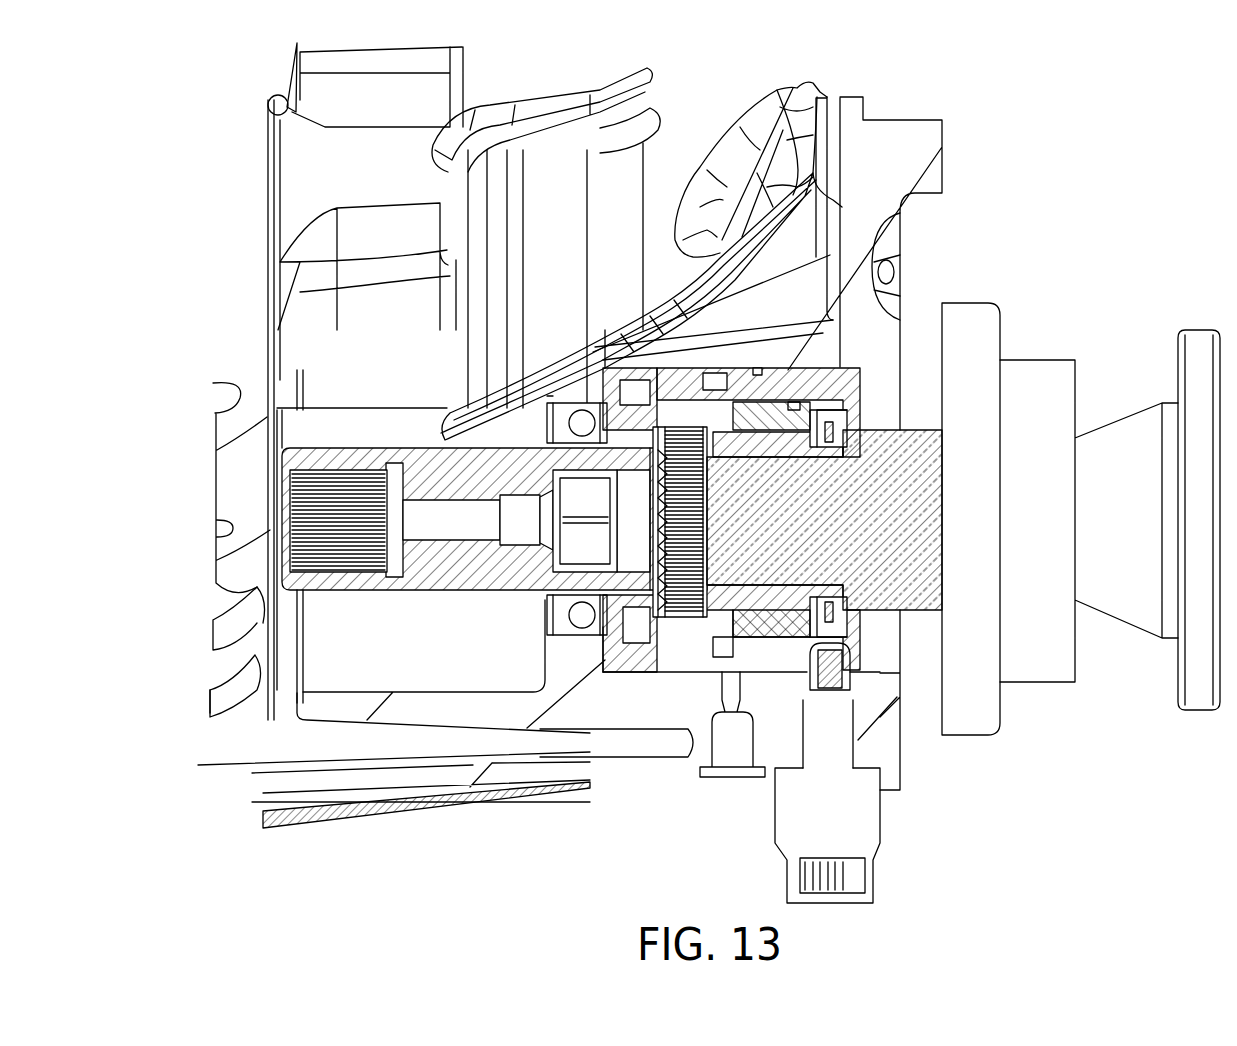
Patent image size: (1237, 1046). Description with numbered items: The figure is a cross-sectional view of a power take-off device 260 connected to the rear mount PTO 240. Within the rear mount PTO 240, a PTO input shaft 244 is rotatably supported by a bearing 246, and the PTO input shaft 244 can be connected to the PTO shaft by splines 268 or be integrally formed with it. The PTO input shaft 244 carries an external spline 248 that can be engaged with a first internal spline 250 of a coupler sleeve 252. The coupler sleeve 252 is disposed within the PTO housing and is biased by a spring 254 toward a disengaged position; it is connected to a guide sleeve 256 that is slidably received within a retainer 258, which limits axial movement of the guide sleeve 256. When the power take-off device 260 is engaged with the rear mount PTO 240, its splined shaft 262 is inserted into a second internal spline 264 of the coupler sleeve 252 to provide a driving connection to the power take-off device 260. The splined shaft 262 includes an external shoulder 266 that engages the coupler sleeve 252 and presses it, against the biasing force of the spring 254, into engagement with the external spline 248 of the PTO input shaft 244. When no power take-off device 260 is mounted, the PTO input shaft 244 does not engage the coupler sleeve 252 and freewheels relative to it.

The rear mount PTO 240 is at (656, 687).
The PTO input shaft 244 is at (441, 575).
The bearing 246 is at (588, 400).
The external spline 248 is at (553, 585).
The first internal spline 250 is at (678, 430).
The coupler sleeve 252 is at (705, 592).
The spring 254 is at (605, 383).
The guide sleeve 256 is at (867, 455).
The retainer 258 is at (803, 420).
The power take-off device 260 is at (1111, 308).
The splined shaft 262 is at (807, 527).
The second internal spline 264 is at (900, 588).
The external shoulder 266 is at (832, 408).
The splines 268 is at (300, 525).